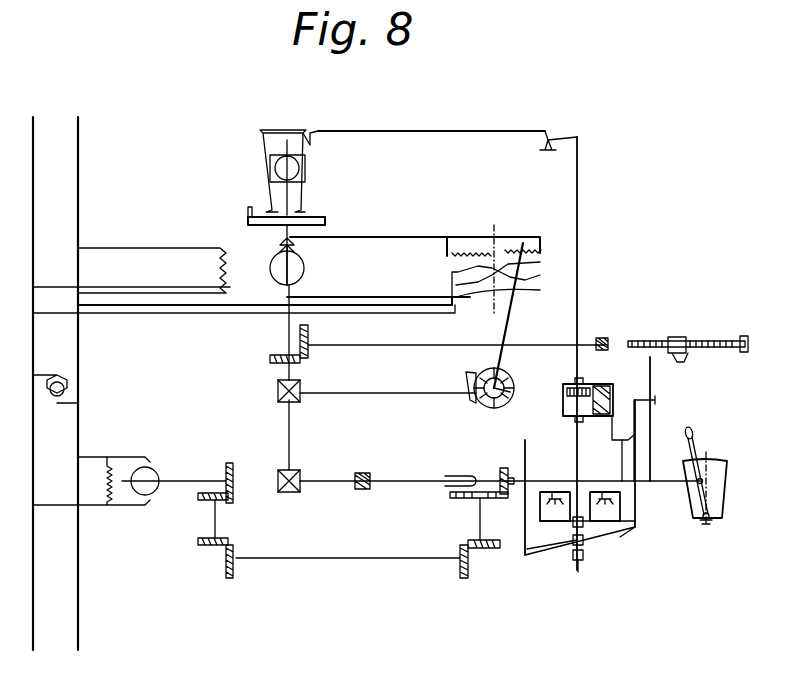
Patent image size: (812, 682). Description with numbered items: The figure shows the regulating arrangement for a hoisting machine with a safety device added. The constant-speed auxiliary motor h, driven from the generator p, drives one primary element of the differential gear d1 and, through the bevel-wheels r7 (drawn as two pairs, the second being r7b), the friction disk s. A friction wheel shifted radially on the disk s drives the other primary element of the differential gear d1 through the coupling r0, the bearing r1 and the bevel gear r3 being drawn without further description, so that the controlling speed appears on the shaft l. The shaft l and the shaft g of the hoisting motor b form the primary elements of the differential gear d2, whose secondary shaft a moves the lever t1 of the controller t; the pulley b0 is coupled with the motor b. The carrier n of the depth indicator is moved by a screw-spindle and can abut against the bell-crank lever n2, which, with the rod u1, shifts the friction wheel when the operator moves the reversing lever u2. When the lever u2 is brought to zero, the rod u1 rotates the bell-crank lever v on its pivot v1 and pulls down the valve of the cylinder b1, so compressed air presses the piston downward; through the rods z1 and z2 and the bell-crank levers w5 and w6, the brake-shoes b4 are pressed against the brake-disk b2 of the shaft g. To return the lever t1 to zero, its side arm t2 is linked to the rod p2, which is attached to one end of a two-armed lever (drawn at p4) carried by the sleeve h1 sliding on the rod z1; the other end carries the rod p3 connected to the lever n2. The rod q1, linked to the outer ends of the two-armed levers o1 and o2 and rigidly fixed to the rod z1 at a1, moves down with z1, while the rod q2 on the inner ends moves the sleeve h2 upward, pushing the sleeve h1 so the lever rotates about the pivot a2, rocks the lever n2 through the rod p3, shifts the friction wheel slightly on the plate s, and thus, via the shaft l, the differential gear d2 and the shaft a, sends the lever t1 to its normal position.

The brake-shoes b4 is at (300, 160).
The bell-crank lever w6 is at (310, 132).
The rod z2 is at (431, 118).
The bell-crank lever w5 is at (549, 136).
The brake-disk b2 is at (249, 216).
The pulley b0 is at (326, 219).
The hoisting motor b is at (306, 266).
The rod z1 is at (589, 353).
The controller t is at (417, 270).
The lever of the controller t1 is at (510, 320).
The shaft of the hoisting motor g is at (284, 330).
The bevel gear r3 is at (295, 355).
The carrier of the depth indicator n is at (680, 350).
The side arm t2 is at (516, 390).
The bell-crank lever n2 is at (651, 396).
The differential gear d2 is at (276, 392).
The secondary shaft a is at (355, 394).
The cylinder b1 is at (563, 406).
The pivot v1 is at (623, 424).
The bell-crank lever v is at (620, 440).
The controlling shaft l is at (286, 432).
The generator p is at (65, 388).
The auxiliary motor h is at (157, 470).
The clutch r1 is at (508, 468).
The coupling r0 is at (461, 468).
The reversing lever u2 is at (705, 447).
The two-armed lever o1 is at (550, 492).
The two-armed lever o2 is at (600, 492).
The rod u1 is at (650, 481).
The rod p2 is at (510, 496).
The friction disk s is at (460, 500).
The differential gear d1 is at (286, 494).
The bevel-wheels r7 is at (218, 520).
The bevel gear pair lower r7b is at (480, 562).
The rod p3 is at (638, 512).
The sleeve h1 is at (555, 541).
The rigid connection a1 is at (584, 527).
The rod q1 is at (628, 533).
The pivot a2 is at (526, 556).
The bar p4 is at (566, 548).
The rod q2 is at (586, 558).
The sleeve h2 is at (578, 572).